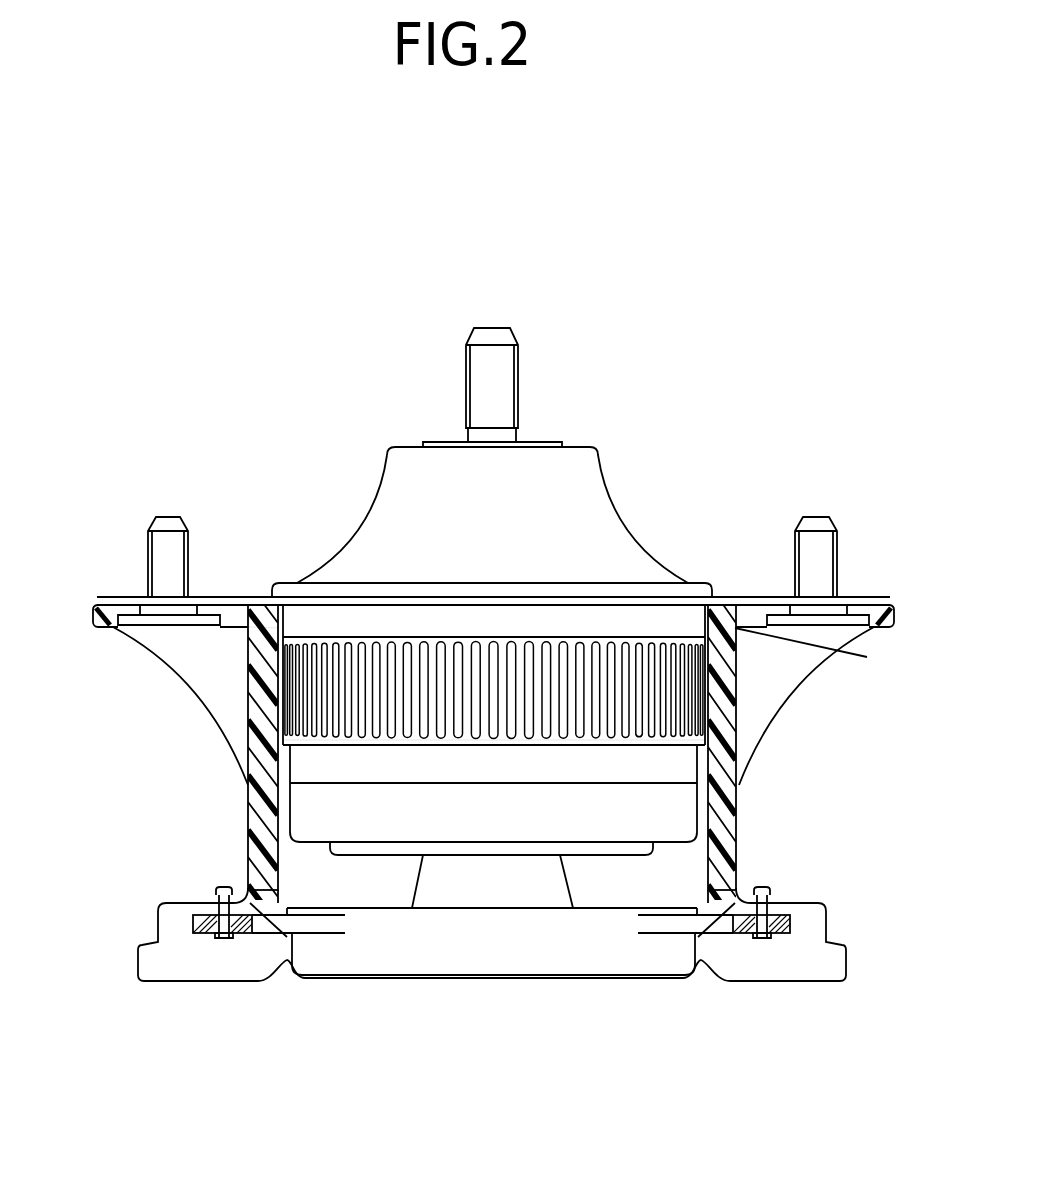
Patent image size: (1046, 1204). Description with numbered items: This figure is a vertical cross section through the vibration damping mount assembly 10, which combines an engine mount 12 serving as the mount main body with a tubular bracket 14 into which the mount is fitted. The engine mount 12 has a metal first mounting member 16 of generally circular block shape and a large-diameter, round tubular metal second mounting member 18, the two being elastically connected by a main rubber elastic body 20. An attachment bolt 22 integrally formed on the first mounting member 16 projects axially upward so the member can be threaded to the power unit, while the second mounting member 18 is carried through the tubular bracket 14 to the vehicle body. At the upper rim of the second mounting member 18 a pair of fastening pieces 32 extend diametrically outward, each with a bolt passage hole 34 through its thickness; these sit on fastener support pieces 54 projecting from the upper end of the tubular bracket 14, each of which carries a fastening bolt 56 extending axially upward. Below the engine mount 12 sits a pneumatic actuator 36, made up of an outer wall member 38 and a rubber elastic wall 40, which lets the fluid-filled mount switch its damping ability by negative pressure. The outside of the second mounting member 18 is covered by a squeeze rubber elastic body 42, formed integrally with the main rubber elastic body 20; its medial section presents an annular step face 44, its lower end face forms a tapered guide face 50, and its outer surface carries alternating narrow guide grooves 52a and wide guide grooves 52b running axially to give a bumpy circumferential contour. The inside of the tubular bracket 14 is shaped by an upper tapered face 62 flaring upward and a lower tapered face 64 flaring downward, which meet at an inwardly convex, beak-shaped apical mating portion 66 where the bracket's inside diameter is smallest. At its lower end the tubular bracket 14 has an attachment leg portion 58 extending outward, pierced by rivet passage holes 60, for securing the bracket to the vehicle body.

The vibration damping mount assembly 10 is at (755, 403).
The engine mount 12 is at (640, 485).
The tubular bracket 14 is at (240, 752).
The first mounting member 16 is at (540, 443).
The second mounting member 18 is at (672, 800).
The main rubber elastic body 20 is at (388, 538).
The attachment bolt 22 is at (487, 382).
The fastening piece 32 is at (128, 597).
The bolt passage hole 34 is at (195, 598).
The pneumatic actuator 36 is at (585, 1002).
The outer wall member 38 is at (372, 962).
The rubber elastic wall 40 is at (483, 888).
The squeeze rubber elastic body 42 is at (302, 755).
The annular step face 44 is at (860, 658).
The tapered guide face 50 is at (692, 750).
The narrow guide groove 52a is at (423, 680).
The wide guide groove 52b is at (340, 680).
The fastener support piece 54 is at (878, 600).
The fastening bolt 56 is at (162, 553).
The attachment leg portion 58 is at (178, 910).
The rivet passage hole 60 is at (225, 930).
The upper tapered face 62 is at (278, 628).
The lower tapered face 64 is at (280, 866).
The apical mating portion 66 is at (740, 632).